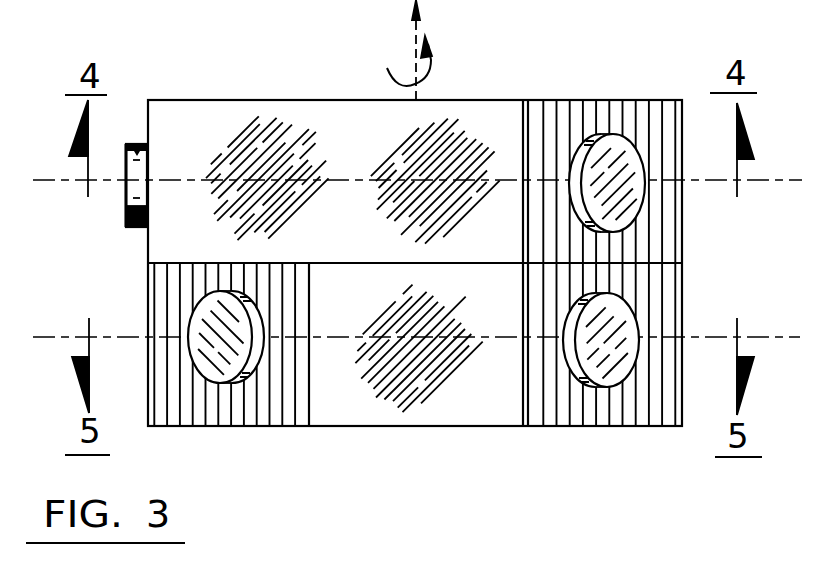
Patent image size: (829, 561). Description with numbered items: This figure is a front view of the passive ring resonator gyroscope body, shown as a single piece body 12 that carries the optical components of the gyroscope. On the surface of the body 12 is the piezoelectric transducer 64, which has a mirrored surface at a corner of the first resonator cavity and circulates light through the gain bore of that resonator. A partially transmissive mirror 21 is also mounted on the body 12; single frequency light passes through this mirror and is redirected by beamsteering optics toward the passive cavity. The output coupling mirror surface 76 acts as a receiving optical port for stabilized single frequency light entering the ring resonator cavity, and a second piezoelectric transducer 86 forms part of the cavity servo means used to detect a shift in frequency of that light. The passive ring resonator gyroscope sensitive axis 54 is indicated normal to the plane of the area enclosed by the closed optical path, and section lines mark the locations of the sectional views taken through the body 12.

The single piece body 12 is at (345, 150).
The partially transmissive mirror 21 is at (131, 228).
The passive ring resonator gyroscope sensitive axis 54 is at (423, 85).
The PZT1 64 is at (591, 223).
The output coupling mirror surface 76 is at (259, 338).
The PZT 2 86 is at (612, 381).